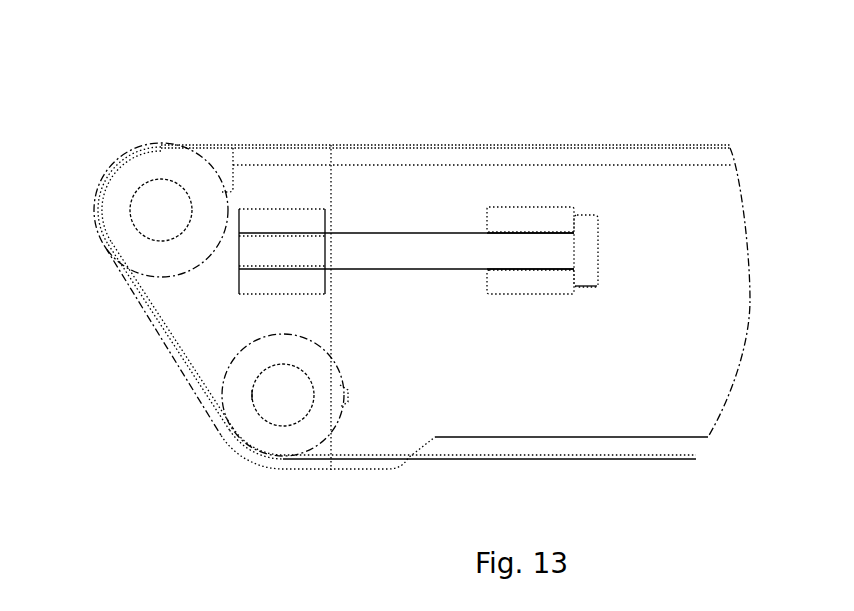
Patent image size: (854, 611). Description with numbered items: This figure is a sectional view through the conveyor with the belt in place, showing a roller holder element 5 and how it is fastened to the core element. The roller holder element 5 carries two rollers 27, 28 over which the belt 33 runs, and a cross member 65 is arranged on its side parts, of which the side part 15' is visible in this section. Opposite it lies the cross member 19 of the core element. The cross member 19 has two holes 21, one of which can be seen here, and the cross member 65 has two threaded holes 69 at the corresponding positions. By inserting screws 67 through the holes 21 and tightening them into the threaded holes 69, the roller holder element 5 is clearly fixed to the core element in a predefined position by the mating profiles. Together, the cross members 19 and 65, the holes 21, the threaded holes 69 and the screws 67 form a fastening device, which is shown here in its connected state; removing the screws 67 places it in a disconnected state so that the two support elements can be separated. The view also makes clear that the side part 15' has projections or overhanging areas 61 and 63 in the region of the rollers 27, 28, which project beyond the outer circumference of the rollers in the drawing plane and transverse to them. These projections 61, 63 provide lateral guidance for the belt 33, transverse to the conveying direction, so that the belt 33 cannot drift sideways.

The roller holder element 5 is at (178, 425).
The side part 15' is at (155, 339).
The cross member 19 is at (499, 207).
The hole 21 is at (522, 233).
The roller 27 is at (150, 160).
The roller 28 is at (232, 355).
The belt 33 is at (291, 148).
The projection 61 is at (97, 177).
The projection 63 is at (260, 465).
The cross member 65 is at (300, 207).
The screw 67 is at (597, 218).
The threaded hole 69 is at (315, 231).